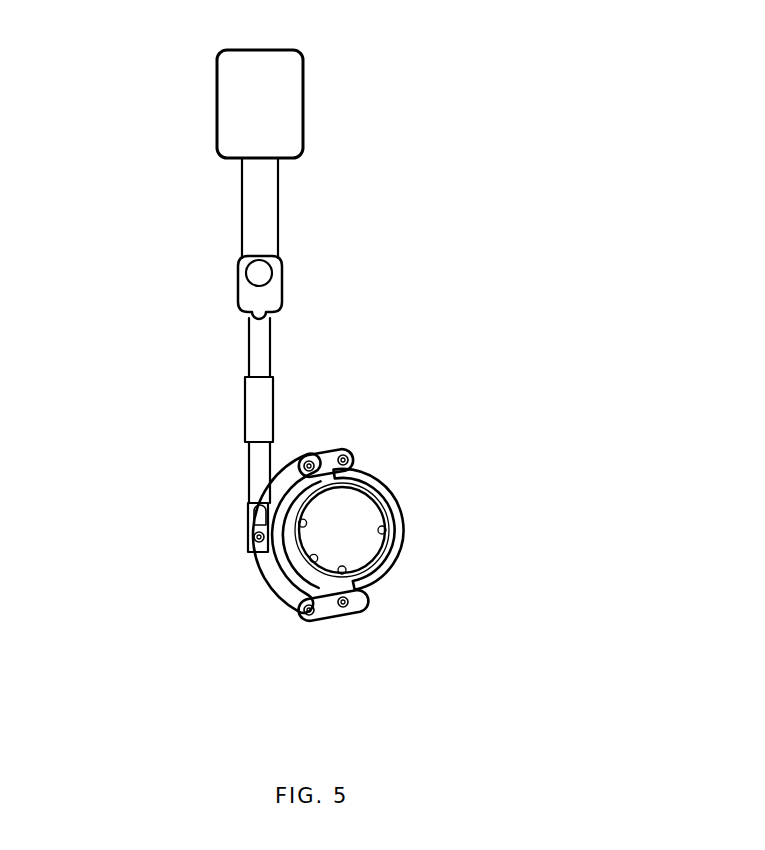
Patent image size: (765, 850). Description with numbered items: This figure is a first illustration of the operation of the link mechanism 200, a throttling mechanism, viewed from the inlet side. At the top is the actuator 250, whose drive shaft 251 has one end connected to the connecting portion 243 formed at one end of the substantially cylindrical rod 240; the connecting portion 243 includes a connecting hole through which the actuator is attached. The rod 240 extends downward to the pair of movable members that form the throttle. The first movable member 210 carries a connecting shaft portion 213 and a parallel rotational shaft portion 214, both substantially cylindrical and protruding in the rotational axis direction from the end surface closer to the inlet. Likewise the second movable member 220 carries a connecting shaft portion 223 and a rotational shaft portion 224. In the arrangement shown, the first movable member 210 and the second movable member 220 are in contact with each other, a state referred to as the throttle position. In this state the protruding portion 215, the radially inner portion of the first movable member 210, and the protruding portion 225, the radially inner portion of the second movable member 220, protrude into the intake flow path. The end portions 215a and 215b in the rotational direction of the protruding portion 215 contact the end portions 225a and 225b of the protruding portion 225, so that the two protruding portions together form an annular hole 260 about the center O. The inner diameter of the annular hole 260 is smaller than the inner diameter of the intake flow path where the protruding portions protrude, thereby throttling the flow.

The link mechanism 200 is at (100, 66).
The actuator 250 is at (270, 110).
The drive shaft 251 is at (270, 220).
The connecting portion 243 is at (270, 293).
The rod 240 is at (270, 347).
The annular hole 260 is at (256, 525).
The end portion 225b is at (292, 504).
The center axis O is at (340, 533).
The connecting shaft portion 213 is at (312, 458).
The second movable member 220 is at (322, 452).
The rotational shaft portion 214 is at (355, 460).
The end portion 215a is at (300, 506).
The protruding portion 215 is at (384, 530).
The end portion 215b is at (348, 562).
The first movable member 210 is at (378, 593).
The protruding portion 225 is at (260, 576).
The connecting shaft portion 223 is at (296, 614).
The end portion 225a is at (340, 578).
The rotational shaft portion 224 is at (356, 608).